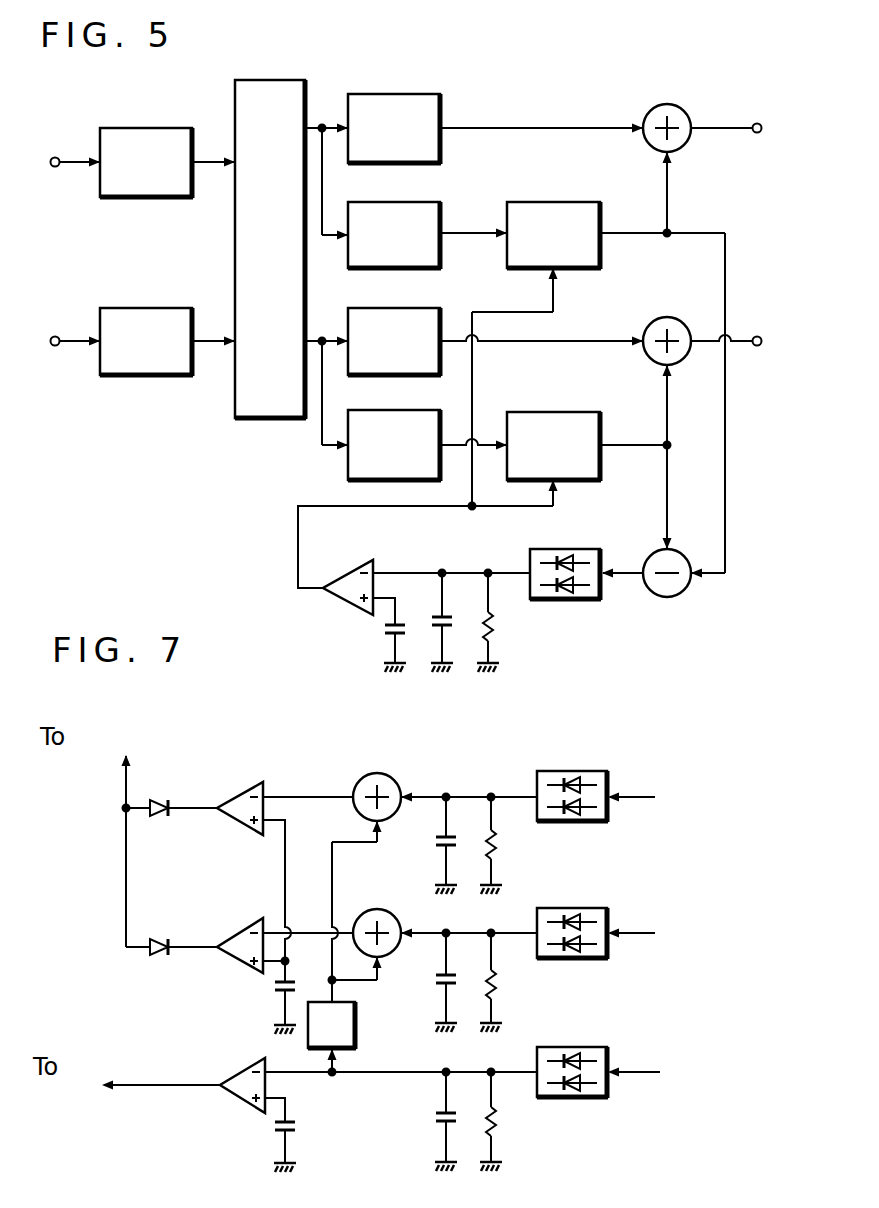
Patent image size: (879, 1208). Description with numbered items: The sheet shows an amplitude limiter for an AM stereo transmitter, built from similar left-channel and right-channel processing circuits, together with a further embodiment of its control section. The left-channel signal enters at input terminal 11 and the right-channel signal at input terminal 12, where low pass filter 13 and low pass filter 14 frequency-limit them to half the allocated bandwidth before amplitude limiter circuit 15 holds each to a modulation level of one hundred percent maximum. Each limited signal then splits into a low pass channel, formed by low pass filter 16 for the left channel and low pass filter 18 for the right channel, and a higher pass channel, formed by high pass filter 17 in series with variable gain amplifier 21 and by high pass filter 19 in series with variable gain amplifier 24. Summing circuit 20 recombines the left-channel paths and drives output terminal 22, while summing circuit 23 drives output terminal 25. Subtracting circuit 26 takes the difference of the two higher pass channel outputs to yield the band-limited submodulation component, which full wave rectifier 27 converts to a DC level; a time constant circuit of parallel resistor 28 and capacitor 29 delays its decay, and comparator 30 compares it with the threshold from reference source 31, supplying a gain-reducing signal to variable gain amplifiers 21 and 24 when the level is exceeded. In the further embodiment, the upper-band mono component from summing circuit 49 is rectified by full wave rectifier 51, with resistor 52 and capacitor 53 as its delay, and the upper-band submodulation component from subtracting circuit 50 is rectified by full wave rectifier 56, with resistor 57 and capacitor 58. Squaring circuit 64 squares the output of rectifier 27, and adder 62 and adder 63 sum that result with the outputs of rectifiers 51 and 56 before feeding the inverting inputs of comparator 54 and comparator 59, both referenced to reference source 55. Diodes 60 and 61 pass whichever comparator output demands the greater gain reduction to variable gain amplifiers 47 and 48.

In FIG. 5, the input terminal 11 is at (55, 157).
In FIG. 5, the input terminal 12 is at (55, 336).
In FIG. 5, the low pass filter 13 is at (152, 128).
In FIG. 5, the low pass filter 14 is at (152, 308).
In FIG. 5, the amplitude limiter circuit 15 is at (304, 62).
In FIG. 5, the low pass filter 16 is at (448, 96).
In FIG. 5, the high pass filter 17 is at (440, 222).
In FIG. 5, the low pass filter 18 is at (440, 320).
In FIG. 5, the high pass filter 19 is at (440, 425).
In FIG. 5, the summing circuit 20 is at (680, 152).
In FIG. 5, the variable gain amplifier 21 is at (572, 202).
In FIG. 7, the variable gain amplifier 21 is at (149, 1065).
In FIG. 5, the output terminal 22 is at (751, 122).
In FIG. 5, the summing circuit 23 is at (680, 364).
In FIG. 5, the variable gain amplifier 24 is at (572, 412).
In FIG. 7, the variable gain amplifier 24 is at (149, 1065).
In FIG. 5, the output terminal 25 is at (757, 336).
In FIG. 5, the subtracting circuit 26 is at (684, 551).
In FIG. 7, the subtracting circuit 26 is at (657, 1062).
In FIG. 5, the full wave rectifier 27 is at (568, 549).
In FIG. 7, the full wave rectifier 27 is at (566, 1047).
In FIG. 5, the resistor 28 is at (492, 630).
In FIG. 7, the resistor 28 is at (495, 1125).
In FIG. 5, the capacitor 29 is at (448, 620).
In FIG. 7, the capacitor 29 is at (440, 1125).
In FIG. 5, the comparator 30 is at (345, 560).
In FIG. 7, the comparator 30 is at (234, 1108).
In FIG. 5, the reference source 31 is at (383, 628).
In FIG. 7, the reference source 31 is at (298, 1126).
In FIG. 7, the variable gain amplifier 47 is at (131, 759).
In FIG. 7, the variable gain amplifier 48 is at (131, 759).
In FIG. 7, the summing circuit 49 is at (657, 786).
In FIG. 7, the subtracting circuit 50 is at (657, 922).
In FIG. 7, the full wave rectifier 51 is at (566, 771).
In FIG. 7, the resistor 52 is at (495, 850).
In FIG. 7, the capacitor 53 is at (440, 852).
In FIG. 7, the comparator 54 is at (228, 822).
In FIG. 7, the reference source 55 is at (272, 990).
In FIG. 7, the full wave rectifier 56 is at (566, 908).
In FIG. 7, the resistor 57 is at (495, 982).
In FIG. 7, the capacitor 58 is at (440, 988).
In FIG. 7, the comparator 59 is at (228, 930).
In FIG. 7, the diode 60 is at (160, 818).
In FIG. 7, the diode 61 is at (160, 937).
In FIG. 7, the adder 62 is at (394, 820).
In FIG. 7, the adder 63 is at (358, 913).
In FIG. 7, the squaring circuit 64 is at (356, 1010).